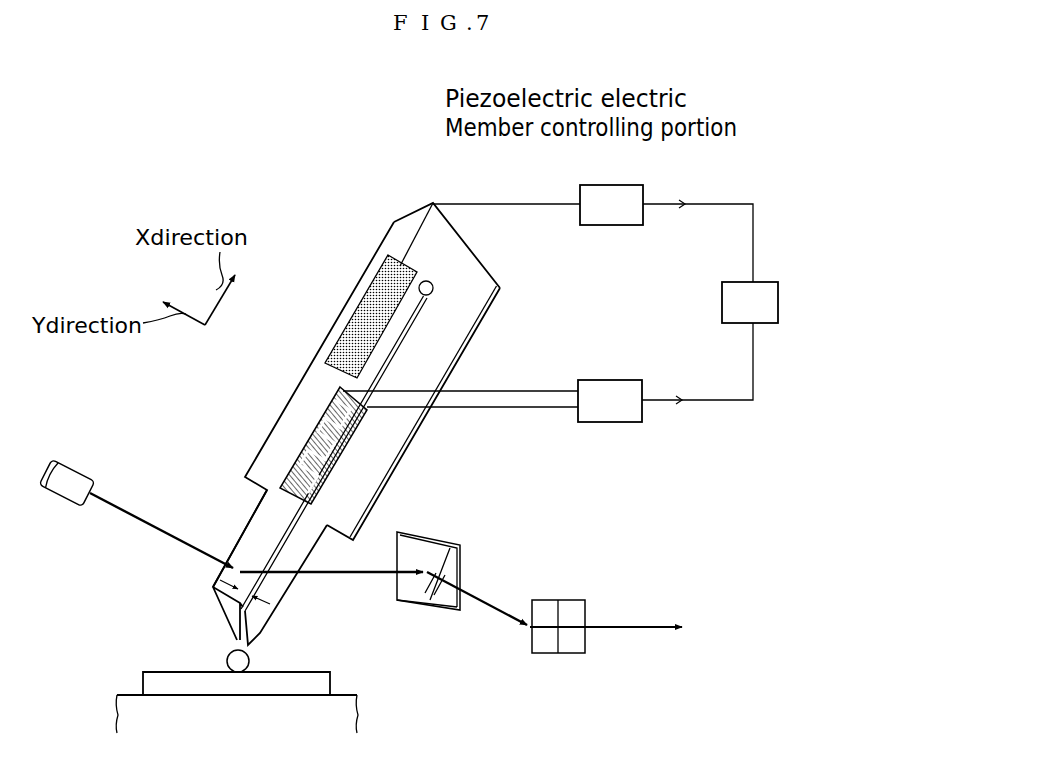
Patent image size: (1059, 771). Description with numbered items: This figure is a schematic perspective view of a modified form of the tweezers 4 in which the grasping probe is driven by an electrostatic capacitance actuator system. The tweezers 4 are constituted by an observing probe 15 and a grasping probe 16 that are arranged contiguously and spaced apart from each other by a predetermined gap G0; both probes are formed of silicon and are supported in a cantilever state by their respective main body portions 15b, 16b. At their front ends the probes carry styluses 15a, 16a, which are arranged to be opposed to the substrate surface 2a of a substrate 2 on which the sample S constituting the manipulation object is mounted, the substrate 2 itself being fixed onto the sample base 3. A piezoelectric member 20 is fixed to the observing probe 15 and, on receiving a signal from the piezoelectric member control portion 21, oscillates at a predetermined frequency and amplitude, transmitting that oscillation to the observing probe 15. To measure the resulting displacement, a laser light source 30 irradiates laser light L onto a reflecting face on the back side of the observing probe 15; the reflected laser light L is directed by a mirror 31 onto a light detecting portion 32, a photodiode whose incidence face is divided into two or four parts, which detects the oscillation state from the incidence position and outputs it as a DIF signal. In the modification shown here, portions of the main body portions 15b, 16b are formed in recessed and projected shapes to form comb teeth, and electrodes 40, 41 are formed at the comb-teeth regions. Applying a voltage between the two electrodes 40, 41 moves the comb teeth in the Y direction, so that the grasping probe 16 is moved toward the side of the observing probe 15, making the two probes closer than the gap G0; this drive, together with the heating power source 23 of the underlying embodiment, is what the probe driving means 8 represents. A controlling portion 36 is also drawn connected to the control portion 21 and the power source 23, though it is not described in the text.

The substrate 2 is at (333, 688).
The substrate surface 2a is at (300, 672).
The sample base 3 is at (347, 715).
The tweezers 4 is at (374, 251).
The probe driving means 8 is at (584, 436).
The observing probe 15 is at (250, 547).
The stylus 15a is at (222, 615).
The main body portion 15b is at (266, 440).
The grasping probe 16 is at (300, 543).
The stylus 16a is at (250, 636).
The main body portion 16b is at (382, 466).
The piezoelectric member 20 is at (353, 304).
The piezoelectric member control portion 21 is at (620, 210).
The heating power source 23 is at (615, 408).
The laser light source 30 is at (72, 465).
The mirror 31 is at (443, 545).
The light detecting portion 32 is at (570, 605).
The controlling portion 36 is at (778, 300).
The electrode 40 is at (300, 438).
The electrode 41 is at (350, 437).
The laser light L is at (153, 526).
The sample S is at (227, 663).
The predetermined gap G0 is at (254, 584).